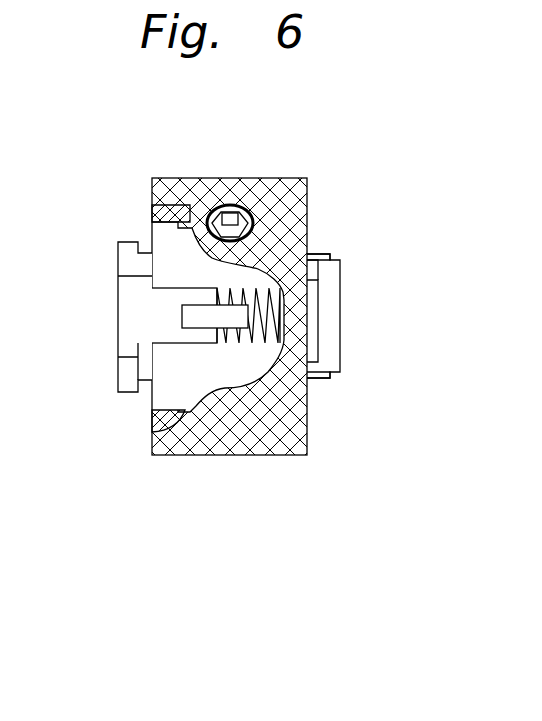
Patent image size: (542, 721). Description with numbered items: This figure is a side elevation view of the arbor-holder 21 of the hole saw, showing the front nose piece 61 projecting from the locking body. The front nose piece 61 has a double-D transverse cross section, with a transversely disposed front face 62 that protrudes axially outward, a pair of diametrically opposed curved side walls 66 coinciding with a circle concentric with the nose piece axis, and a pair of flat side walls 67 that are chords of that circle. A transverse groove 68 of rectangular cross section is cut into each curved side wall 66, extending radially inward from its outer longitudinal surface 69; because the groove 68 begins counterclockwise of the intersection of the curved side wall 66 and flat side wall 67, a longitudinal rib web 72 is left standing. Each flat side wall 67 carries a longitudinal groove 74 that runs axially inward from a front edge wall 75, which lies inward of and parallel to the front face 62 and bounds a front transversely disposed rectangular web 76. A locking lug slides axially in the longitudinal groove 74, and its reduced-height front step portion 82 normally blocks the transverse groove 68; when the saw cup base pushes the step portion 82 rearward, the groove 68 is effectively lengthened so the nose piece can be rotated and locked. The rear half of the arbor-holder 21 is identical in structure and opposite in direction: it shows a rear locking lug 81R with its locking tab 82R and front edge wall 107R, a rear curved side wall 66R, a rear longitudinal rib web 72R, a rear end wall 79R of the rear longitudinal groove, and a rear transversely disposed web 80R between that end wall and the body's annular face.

The arbor-holder 21 is at (260, 272).
The rear locking lug 81R is at (173, 300).
The rear transversely disposed web 80R is at (283, 300).
The transverse groove 68 is at (96, 283).
The curved side wall of rear nose piece 66R is at (96, 310).
The longitudinal rib web of rear nose piece 72R is at (108, 288).
The front face 62 is at (118, 283).
The front edge wall of rear locking tab 107R is at (122, 322).
The rear locking tab 82R is at (142, 327).
The longitudinal rib web 72 is at (313, 268).
The flat side wall 67 is at (358, 239).
The front edge wall 75 is at (330, 258).
The curved side wall 66 is at (368, 316).
The outer longitudinal surface 69 is at (330, 322).
The front nose piece 61 is at (368, 318).
The front transversely disposed rectangular web 76 is at (361, 410).
The longitudinal groove 74 is at (361, 410).
The front step portion 82 is at (320, 382).
The rear end wall of rear longitudinal groove 79R is at (280, 337).